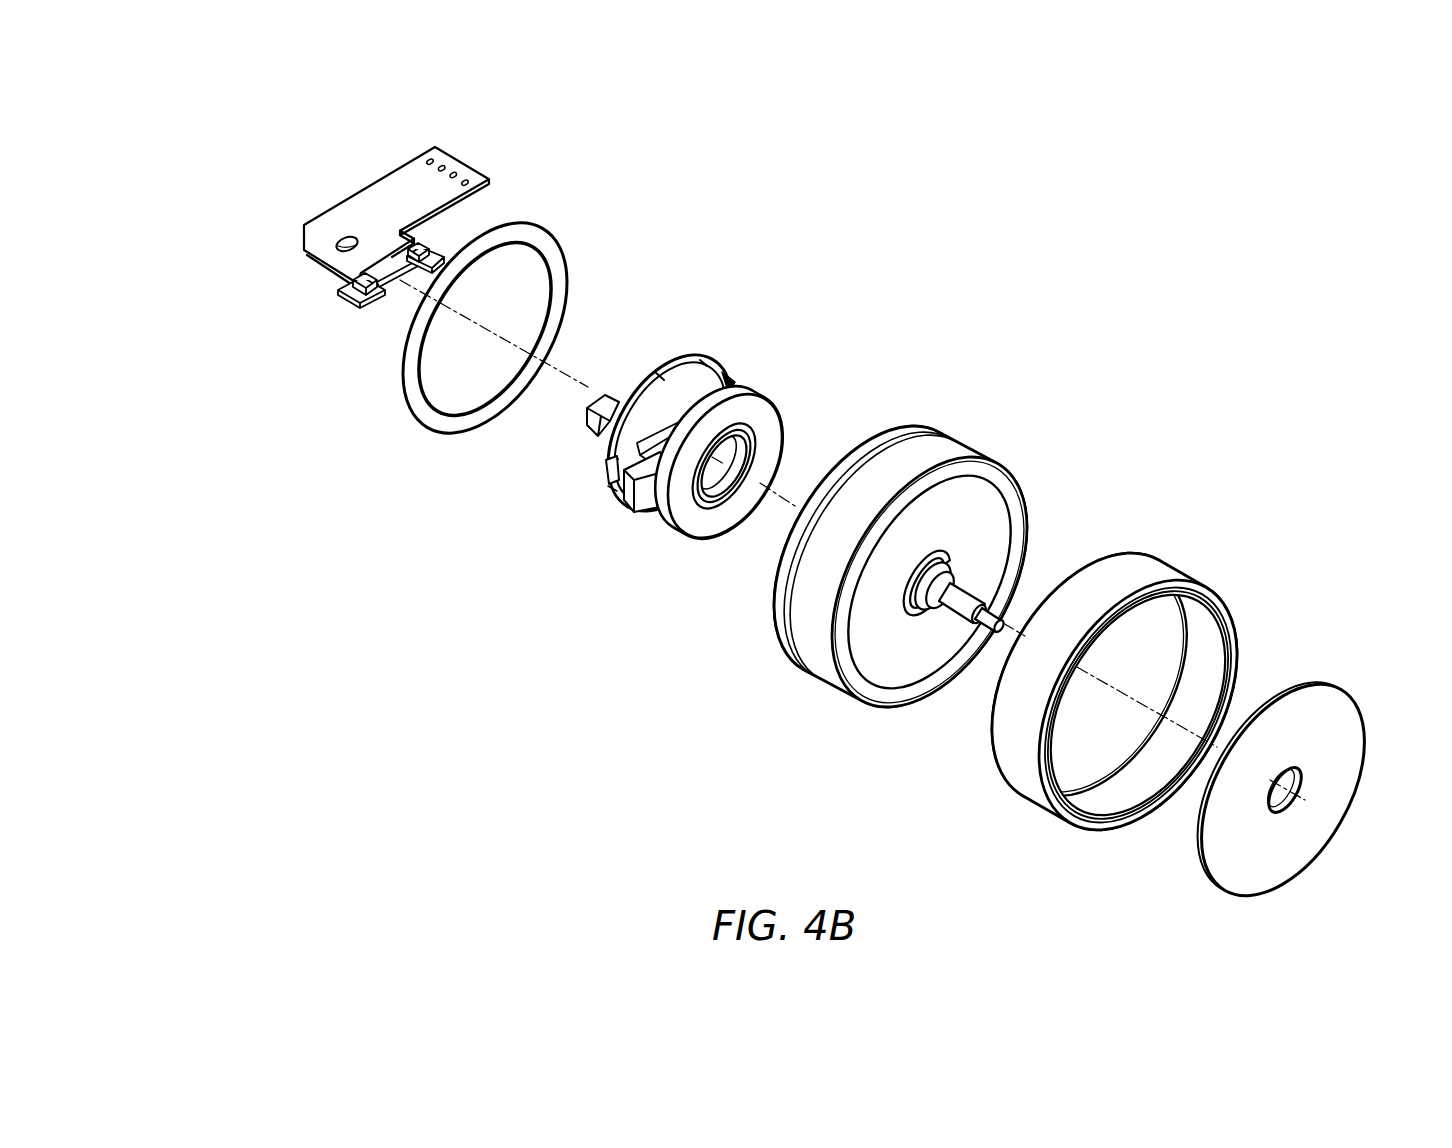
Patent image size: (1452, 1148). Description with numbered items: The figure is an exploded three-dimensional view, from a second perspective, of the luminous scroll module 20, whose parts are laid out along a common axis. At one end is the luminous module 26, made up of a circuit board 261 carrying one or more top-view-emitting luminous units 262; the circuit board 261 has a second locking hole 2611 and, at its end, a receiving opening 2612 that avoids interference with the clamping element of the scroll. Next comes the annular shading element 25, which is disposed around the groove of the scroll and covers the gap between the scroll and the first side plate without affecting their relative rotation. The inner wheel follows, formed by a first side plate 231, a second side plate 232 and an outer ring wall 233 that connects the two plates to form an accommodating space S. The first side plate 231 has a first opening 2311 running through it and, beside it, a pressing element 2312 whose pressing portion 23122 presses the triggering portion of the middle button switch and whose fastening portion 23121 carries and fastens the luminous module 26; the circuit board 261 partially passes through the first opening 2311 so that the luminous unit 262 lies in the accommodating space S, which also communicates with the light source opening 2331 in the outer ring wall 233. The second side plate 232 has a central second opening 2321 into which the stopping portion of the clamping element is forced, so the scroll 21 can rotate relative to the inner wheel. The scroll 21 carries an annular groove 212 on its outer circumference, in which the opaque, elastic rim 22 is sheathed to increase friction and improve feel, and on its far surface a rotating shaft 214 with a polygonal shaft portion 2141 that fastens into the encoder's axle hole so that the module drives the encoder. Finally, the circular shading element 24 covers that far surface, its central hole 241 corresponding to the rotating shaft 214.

The luminous scroll module 20 is at (170, 79).
The scroll 21 is at (888, 437).
The annular groove 212 is at (912, 468).
The rotating shaft 214 is at (998, 605).
The polygonal shaft portion 2141 is at (958, 578).
The rim 22 is at (1153, 567).
The circular shading element 24 is at (1293, 850).
The central hole 241 is at (1300, 785).
The annular shading element 25 is at (535, 243).
The luminous module 26 is at (227, 118).
The circuit board 261 is at (375, 203).
The second locking hole 2611 is at (337, 240).
The receiving opening 2612 is at (397, 278).
The luminous unit 262 is at (347, 300).
The first side plate 231 is at (697, 357).
The first opening 2311 is at (663, 433).
The pressing element 2312 is at (448, 440).
The fastening portion 23121 is at (607, 445).
The pressing portion 23122 is at (598, 417).
The second side plate 232 is at (757, 412).
The second opening 2321 is at (712, 463).
The outer ring wall 233 is at (652, 503).
The light source opening 2331 is at (727, 370).
The accommodating space S is at (611, 490).